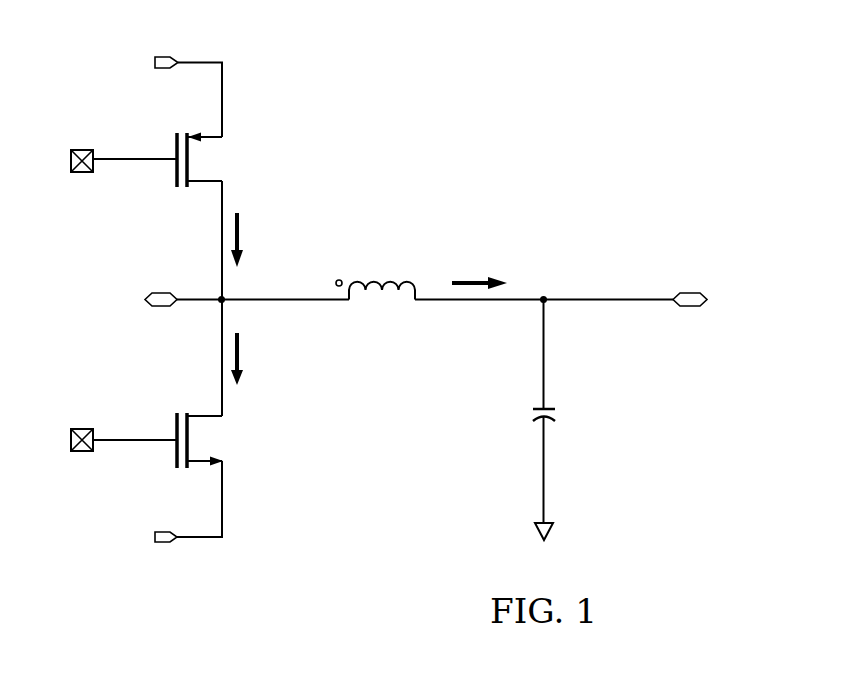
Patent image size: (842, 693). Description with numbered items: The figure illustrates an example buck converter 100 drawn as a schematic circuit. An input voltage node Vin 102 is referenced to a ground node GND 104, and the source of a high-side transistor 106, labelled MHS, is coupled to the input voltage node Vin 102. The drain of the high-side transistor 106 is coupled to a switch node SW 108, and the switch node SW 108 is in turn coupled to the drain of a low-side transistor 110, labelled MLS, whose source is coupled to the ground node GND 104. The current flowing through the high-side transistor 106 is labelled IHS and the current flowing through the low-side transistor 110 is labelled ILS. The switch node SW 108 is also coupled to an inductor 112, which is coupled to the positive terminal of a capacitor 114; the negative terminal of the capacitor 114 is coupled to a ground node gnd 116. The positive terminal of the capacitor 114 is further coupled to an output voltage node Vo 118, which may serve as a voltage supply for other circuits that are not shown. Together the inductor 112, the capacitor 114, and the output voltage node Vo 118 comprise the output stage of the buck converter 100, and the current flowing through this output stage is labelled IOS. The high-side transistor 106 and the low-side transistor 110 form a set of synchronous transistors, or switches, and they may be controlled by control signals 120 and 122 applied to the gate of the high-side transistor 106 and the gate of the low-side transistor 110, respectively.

The buck converter 100 is at (522, 52).
The input voltage node Vin 102 is at (160, 56).
The ground node GND 104 is at (160, 547).
The high-side transistor 106 is at (177, 145).
The switch node SW 108 is at (155, 291).
The low-side transistor 110 is at (177, 450).
The inductor 112 is at (406, 282).
The capacitor 114 is at (555, 416).
The ground node gnd 116 is at (550, 535).
The output voltage node Vo 118 is at (692, 291).
The control signal 120 is at (80, 148).
The control signal 122 is at (78, 455).